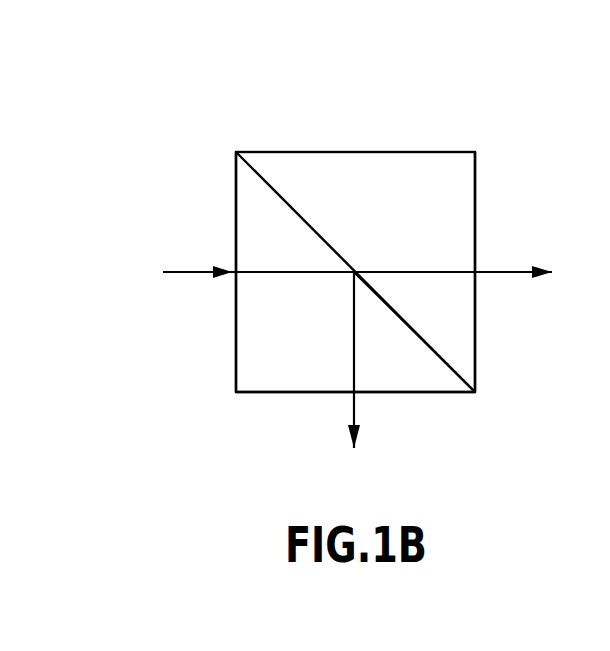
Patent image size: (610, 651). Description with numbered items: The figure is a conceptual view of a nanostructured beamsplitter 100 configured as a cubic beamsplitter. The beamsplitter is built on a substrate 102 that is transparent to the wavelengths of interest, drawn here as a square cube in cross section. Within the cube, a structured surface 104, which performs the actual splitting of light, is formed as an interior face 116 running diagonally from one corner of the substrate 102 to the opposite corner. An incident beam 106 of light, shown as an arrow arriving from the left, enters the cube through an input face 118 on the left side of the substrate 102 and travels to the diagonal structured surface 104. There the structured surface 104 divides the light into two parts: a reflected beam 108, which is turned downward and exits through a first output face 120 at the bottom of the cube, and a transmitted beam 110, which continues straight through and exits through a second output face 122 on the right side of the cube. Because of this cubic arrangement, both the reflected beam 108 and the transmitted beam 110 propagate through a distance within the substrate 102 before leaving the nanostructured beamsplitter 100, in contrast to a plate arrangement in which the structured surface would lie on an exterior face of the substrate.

The nanostructured beamsplitter 100 is at (202, 100).
The substrate 102 is at (424, 152).
The structured surface 104 is at (430, 343).
The incident beam 106 is at (196, 272).
The reflected beam 108 is at (354, 400).
The transmitted beam 110 is at (500, 270).
The interior face 116 is at (293, 208).
The input face 118 is at (237, 213).
The first output face 120 is at (290, 393).
The second output face 122 is at (475, 207).